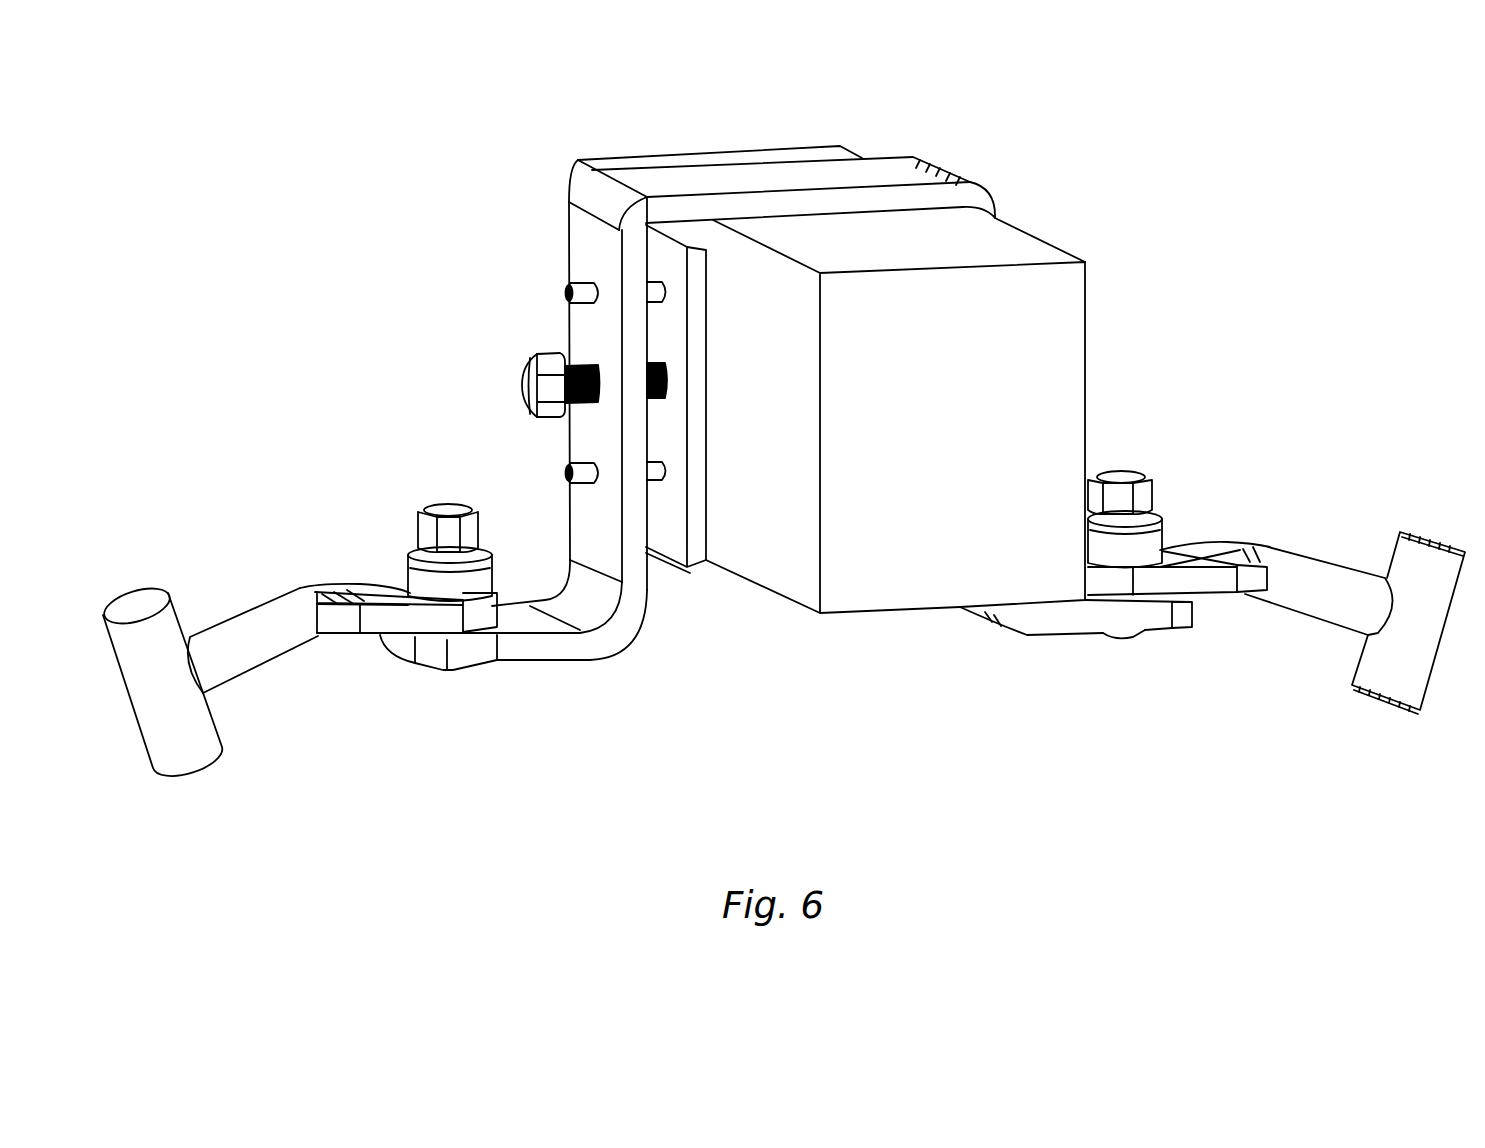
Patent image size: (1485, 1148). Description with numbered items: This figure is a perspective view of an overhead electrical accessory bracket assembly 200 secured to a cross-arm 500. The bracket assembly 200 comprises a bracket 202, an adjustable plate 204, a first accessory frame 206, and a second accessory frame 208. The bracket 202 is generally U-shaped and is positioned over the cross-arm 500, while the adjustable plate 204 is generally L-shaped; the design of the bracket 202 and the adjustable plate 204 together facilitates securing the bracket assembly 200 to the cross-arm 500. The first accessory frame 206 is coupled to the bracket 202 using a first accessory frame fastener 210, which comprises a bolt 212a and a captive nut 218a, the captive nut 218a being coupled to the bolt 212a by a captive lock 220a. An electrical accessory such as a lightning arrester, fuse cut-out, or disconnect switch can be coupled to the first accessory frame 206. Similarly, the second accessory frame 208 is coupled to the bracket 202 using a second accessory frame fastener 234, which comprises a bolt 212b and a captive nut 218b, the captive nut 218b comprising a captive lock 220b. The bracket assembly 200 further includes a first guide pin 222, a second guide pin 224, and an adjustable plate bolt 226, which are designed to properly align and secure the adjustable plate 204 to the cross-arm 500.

The bracket assembly 200 is at (970, 138).
The bracket 202 is at (588, 193).
The adjustable plate 204 is at (698, 573).
The first accessory frame 206 is at (270, 597).
The second accessory frame 208 is at (1337, 555).
The first accessory frame fastener 210 is at (433, 703).
The bolt 212a is at (470, 675).
The bolt 212b is at (1142, 640).
The captive nut 218a is at (408, 535).
The captive nut 218b is at (1165, 493).
The captive lock 220a is at (410, 572).
The captive lock 220b is at (1160, 537).
The first guide pin 222 is at (577, 290).
The second guide pin 224 is at (575, 472).
The adjustable plate bolt 226 is at (513, 373).
The second accessory frame fastener 234 is at (1123, 680).
The cross-arm 500 is at (895, 416).